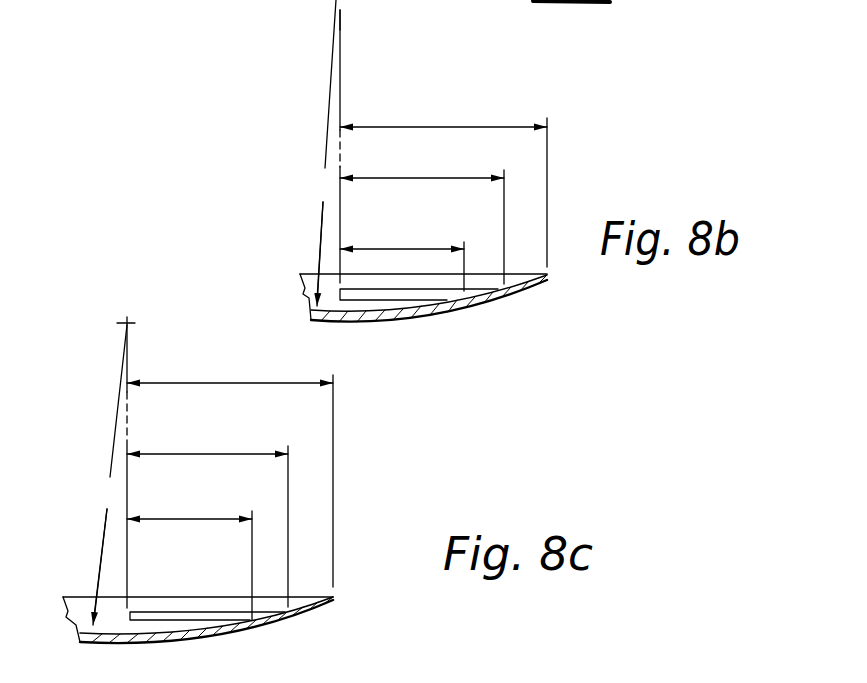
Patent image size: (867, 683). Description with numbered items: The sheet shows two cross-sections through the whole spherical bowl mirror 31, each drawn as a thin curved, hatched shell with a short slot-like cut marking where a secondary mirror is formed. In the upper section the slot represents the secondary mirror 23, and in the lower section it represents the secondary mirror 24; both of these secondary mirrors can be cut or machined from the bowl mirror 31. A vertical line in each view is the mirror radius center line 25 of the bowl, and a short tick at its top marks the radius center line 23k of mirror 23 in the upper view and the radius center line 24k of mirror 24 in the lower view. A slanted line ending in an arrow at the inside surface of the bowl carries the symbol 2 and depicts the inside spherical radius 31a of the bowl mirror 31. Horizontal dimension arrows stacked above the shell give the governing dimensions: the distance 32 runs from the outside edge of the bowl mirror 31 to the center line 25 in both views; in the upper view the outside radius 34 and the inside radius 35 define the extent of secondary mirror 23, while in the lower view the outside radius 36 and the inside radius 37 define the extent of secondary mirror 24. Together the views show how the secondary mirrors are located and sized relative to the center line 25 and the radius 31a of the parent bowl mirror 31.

In FIG. 8B, the distance from reference line to blade edge 2 is at (328, 197).
In FIG. 8C, the distance from reference line to blade edge 2 is at (111, 506).
In FIG. 8B, the secondary mirror 23 is at (380, 296).
In FIG. 8B, the radius center line 23k is at (353, 0).
In FIG. 8C, the secondary mirror 24 is at (187, 615).
In FIG. 8C, the radius center line 24k is at (128, 322).
In FIG. 8B, the mirror radius center line 25 is at (341, 68).
In FIG. 8C, the mirror radius center line 25 is at (128, 352).
In FIG. 8B, the bowl mirror 31 is at (533, 290).
In FIG. 8C, the bowl mirror 31 is at (310, 615).
In FIG. 8B, the inside spherical radius 31a is at (328, 118).
In FIG. 8C, the inside spherical radius 31a is at (112, 430).
In FIG. 8B, the distance from outside edge to center line 32 is at (432, 126).
In FIG. 8C, the distance from outside edge to center line 32 is at (217, 382).
In FIG. 8B, the outside radius 34 is at (421, 177).
In FIG. 8B, the inside radius 35 is at (394, 248).
In FIG. 8C, the outside radius 36 is at (209, 453).
In FIG. 8C, the inside radius 37 is at (184, 518).